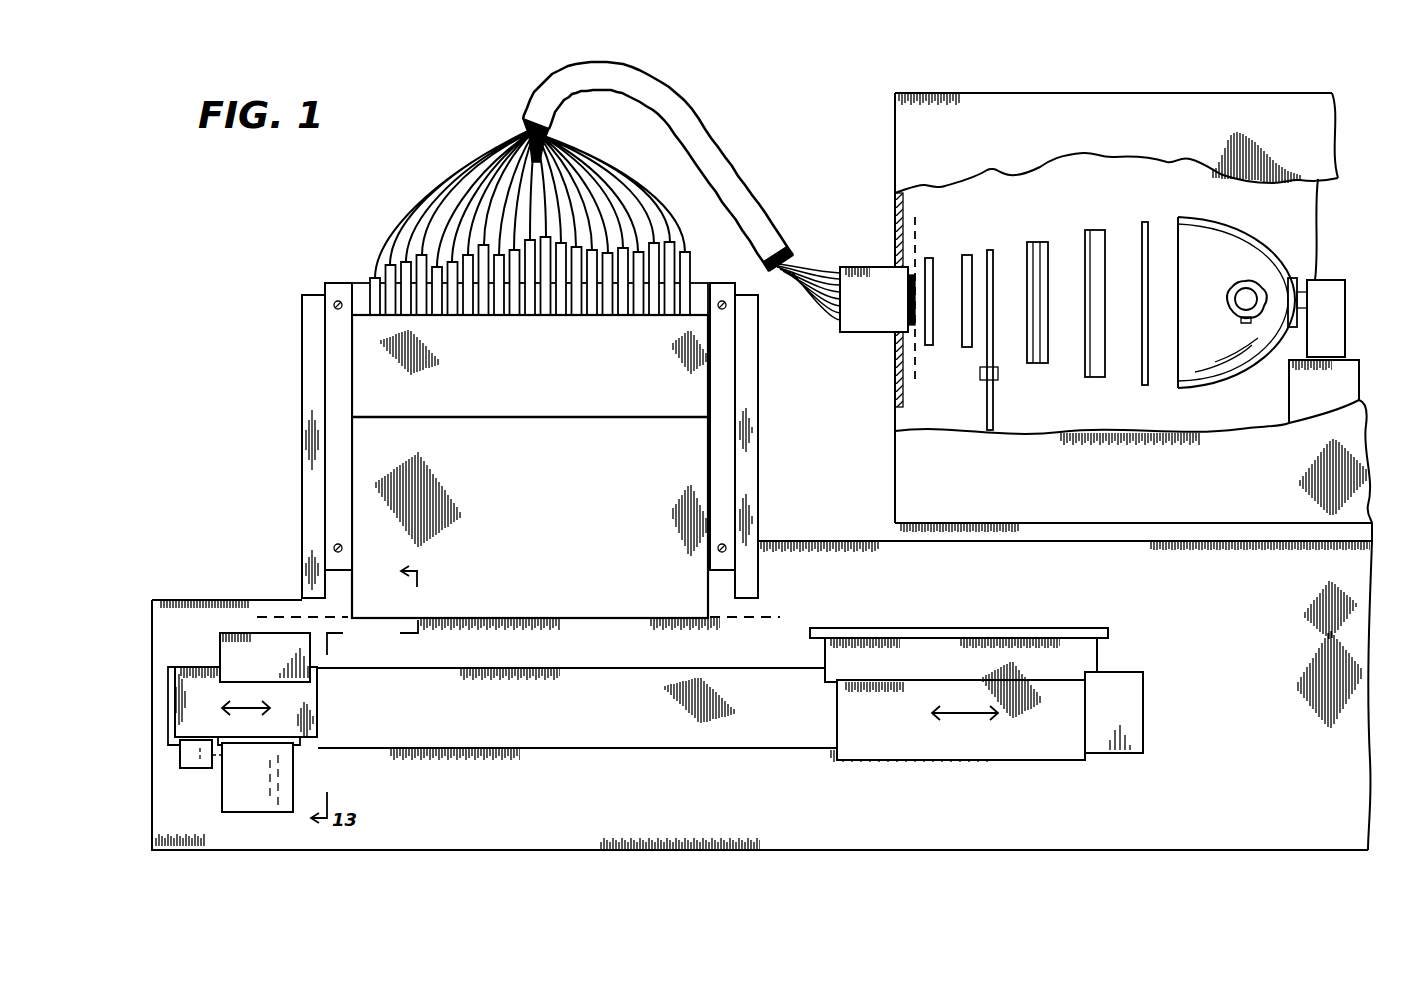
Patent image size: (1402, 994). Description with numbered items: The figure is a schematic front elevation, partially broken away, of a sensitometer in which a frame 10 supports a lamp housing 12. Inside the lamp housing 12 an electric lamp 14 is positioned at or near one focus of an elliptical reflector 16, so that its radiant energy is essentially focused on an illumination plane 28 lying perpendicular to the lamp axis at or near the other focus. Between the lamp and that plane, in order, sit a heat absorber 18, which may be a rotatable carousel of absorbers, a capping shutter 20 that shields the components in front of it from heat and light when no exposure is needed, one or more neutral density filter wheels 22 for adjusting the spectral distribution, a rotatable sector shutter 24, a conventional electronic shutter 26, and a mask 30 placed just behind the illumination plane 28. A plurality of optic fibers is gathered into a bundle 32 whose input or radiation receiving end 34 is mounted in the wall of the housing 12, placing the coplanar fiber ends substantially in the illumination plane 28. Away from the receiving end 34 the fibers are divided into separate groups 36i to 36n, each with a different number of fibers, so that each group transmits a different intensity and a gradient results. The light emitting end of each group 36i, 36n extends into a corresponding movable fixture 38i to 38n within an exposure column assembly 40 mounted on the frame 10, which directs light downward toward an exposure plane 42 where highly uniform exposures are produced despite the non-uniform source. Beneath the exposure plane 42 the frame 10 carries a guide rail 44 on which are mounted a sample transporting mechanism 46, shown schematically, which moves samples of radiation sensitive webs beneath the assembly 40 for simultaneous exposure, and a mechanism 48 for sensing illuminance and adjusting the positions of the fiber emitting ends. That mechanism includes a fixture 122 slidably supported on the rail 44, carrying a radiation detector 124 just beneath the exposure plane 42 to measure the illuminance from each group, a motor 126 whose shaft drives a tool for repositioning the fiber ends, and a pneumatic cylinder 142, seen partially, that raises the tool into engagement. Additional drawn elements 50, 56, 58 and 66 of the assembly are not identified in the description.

The frame 10 is at (1355, 740).
The lamp housing 12 is at (1013, 107).
The electric lamp 14 is at (1238, 285).
The elliptical reflector 16 is at (1238, 245).
The heat absorber 18 is at (1144, 386).
The capping shutter 20 is at (1088, 231).
The neutral density filter wheels 22 is at (1037, 364).
The rotatable sector shutter 24 is at (991, 250).
The electronic shutter 26 is at (963, 333).
The illumination plane 28 is at (917, 222).
The mask 30 is at (931, 260).
The bundle 32 is at (706, 128).
The input or radiation receiving end 34 is at (877, 334).
The group of optic fibers 36i is at (449, 190).
The group of optic fibers 36n is at (648, 160).
The movable fixture 38i is at (371, 281).
The movable fixture 38n is at (688, 258).
The exposure column assembly 40 is at (541, 488).
The exposure plane 42 is at (776, 618).
The guide rail 44 is at (656, 748).
The sample transporting mechanism 46 is at (1003, 775).
The mechanism for sensing illuminance and adjusting fiber end positions 48 is at (328, 713).
The clamp plate 50 is at (727, 370).
The clamp plate 56 is at (370, 385).
The side plate 58 is at (720, 458).
The side plate 66 is at (375, 510).
The fixture 122 is at (317, 679).
The radiation detector 124 is at (228, 660).
The motor 126 is at (293, 779).
The pneumatic cylinder 142 is at (196, 762).